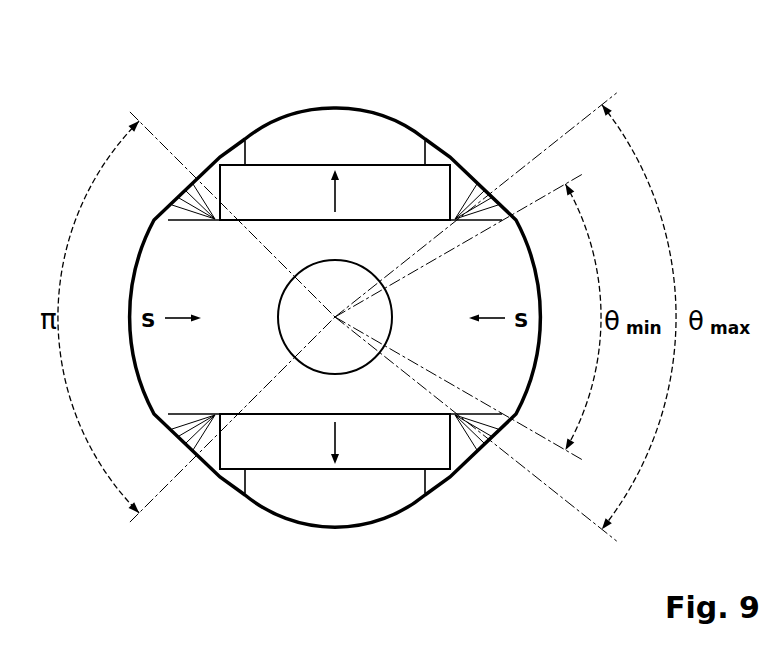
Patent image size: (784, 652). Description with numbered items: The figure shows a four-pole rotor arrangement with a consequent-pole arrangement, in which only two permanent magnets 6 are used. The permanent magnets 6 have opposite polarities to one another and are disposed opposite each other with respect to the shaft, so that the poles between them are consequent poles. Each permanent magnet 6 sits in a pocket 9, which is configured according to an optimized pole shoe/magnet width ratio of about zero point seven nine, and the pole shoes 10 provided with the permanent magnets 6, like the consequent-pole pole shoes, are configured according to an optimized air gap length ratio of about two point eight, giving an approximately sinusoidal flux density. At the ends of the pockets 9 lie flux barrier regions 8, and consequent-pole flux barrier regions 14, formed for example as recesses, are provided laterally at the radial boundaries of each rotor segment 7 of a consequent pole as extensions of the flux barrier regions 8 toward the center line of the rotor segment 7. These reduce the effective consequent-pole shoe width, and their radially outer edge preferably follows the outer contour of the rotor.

The permanent magnet 6 is at (358, 190).
The rotor segment 7 is at (427, 390).
The flux barrier region 8 is at (212, 190).
The pocket 9 is at (207, 170).
The pole shoe 10 is at (390, 132).
The consequent-pole flux barrier region 14 is at (483, 195).